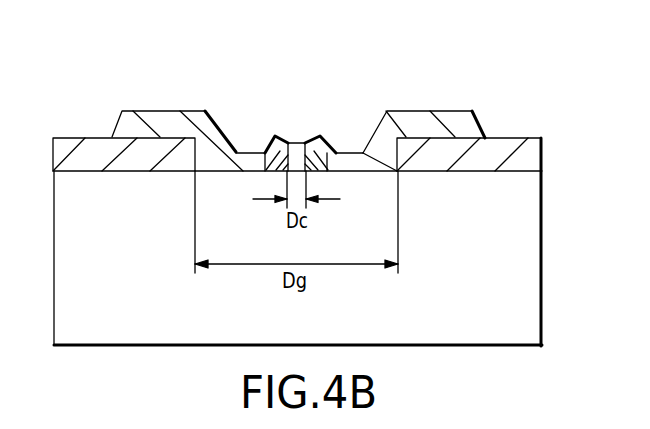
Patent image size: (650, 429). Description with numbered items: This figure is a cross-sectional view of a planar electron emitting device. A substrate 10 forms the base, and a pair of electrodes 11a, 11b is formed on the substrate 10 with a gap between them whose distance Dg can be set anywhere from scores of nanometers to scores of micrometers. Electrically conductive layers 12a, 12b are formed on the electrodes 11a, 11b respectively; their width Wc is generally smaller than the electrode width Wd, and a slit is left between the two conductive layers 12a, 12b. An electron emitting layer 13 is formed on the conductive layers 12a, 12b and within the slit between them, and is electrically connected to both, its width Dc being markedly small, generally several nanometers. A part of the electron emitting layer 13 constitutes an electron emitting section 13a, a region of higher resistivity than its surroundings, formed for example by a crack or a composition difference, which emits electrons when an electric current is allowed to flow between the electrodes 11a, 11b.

The substrate 10 is at (542, 286).
The electrode 11a is at (72, 139).
The electrode 11b is at (519, 143).
The electrically conductive layer 12a is at (172, 114).
The electrically conductive layer 12b is at (432, 113).
The electron emitting layer 13 is at (270, 132).
The electron emitting section 13a is at (298, 144).